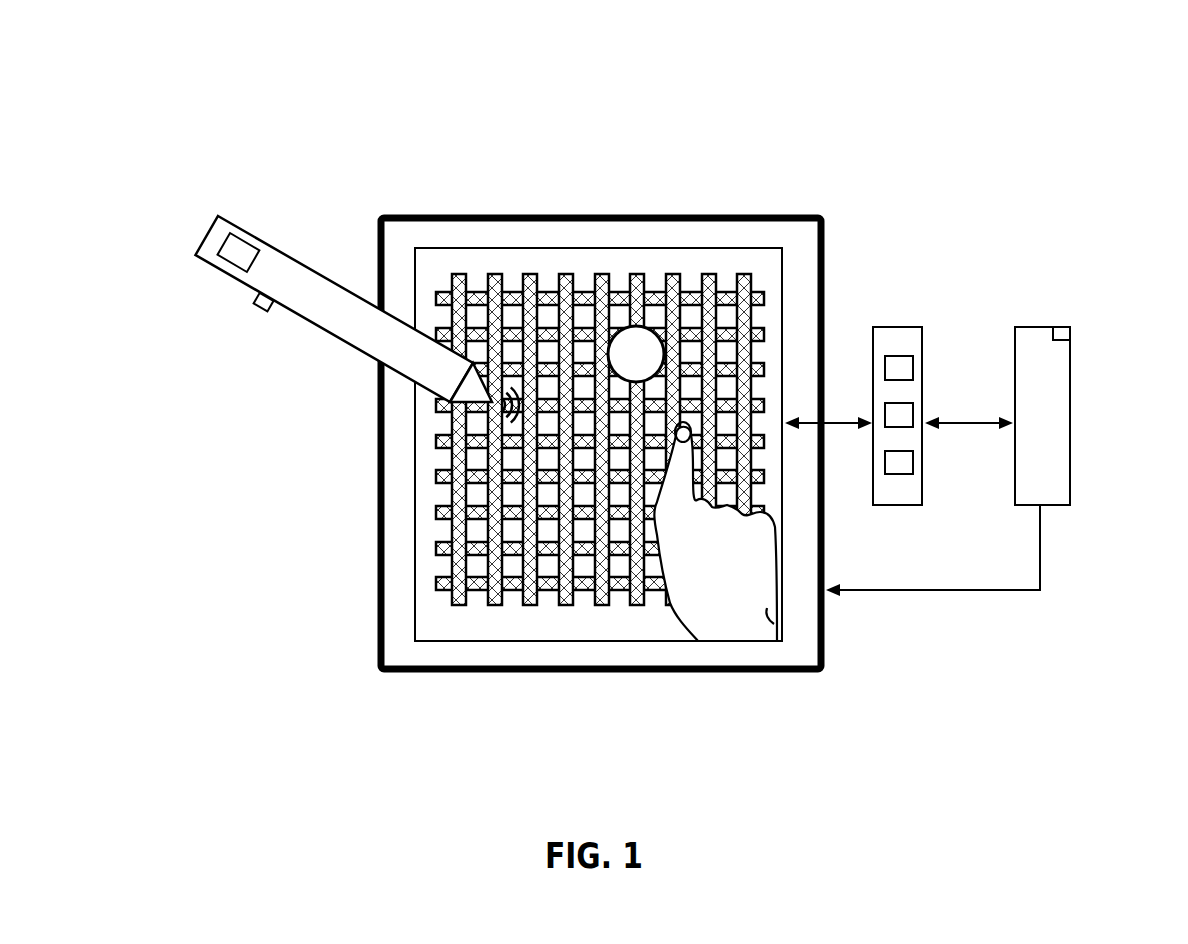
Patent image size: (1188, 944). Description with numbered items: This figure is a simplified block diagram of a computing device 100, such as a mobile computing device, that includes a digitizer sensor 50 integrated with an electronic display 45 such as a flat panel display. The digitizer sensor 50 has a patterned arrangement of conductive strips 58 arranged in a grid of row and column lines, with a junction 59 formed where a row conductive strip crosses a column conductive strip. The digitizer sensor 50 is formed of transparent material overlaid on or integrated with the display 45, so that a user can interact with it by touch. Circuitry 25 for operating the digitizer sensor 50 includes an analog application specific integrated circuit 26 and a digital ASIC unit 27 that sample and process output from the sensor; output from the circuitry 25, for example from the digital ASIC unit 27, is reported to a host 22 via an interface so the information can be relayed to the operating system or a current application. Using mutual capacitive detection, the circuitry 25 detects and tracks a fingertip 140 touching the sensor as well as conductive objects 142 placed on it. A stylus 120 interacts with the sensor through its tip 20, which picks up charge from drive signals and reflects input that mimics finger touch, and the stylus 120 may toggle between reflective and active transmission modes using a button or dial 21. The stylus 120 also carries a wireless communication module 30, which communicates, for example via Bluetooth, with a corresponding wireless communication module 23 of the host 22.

The computing device 100 is at (594, 117).
The electronic display 45 is at (738, 217).
The digitizer sensor 50 is at (783, 300).
The conductive strips 58 is at (667, 275).
The junction 59 is at (566, 547).
The conductive objects 142 is at (606, 347).
The fingertip 140 is at (682, 428).
The stylus 120 is at (343, 288).
The wireless communication module 30 is at (243, 255).
The button or dial 21 is at (256, 305).
The tip 20 is at (480, 395).
The circuitry 25 is at (895, 327).
The analog application specific integrated circuit 26 is at (912, 362).
The digital ASIC unit 27 is at (912, 410).
The host 22 is at (1043, 327).
The wireless communication module 23 is at (1058, 340).